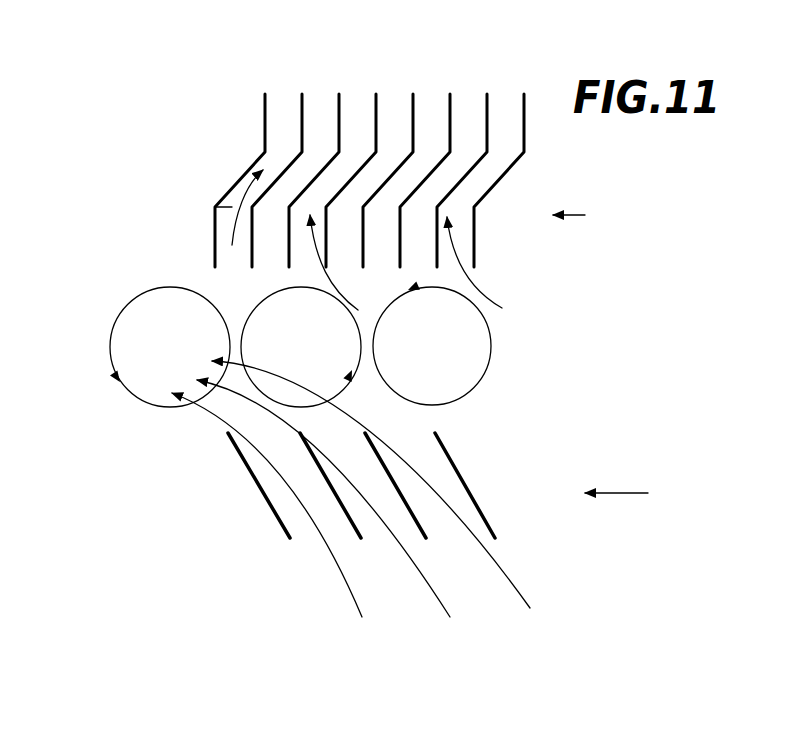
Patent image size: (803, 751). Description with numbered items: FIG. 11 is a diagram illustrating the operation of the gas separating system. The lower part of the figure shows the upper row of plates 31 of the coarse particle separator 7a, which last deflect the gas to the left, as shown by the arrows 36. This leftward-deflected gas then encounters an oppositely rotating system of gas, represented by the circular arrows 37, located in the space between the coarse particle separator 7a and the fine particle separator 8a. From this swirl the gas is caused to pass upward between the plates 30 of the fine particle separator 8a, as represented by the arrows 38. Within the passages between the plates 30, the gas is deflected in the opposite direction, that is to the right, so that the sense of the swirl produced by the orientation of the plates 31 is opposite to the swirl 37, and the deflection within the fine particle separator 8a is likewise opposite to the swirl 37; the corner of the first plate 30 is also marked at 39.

The plates 30 is at (497, 183).
The plates 31 is at (258, 487).
The arrows 36 is at (500, 565).
The arrows 37 is at (118, 315).
The arrows 38 is at (320, 269).
The fin corner / hook 39 is at (232, 207).
The coarse particle separator 7a is at (634, 498).
The fine particle separator 8a is at (585, 216).